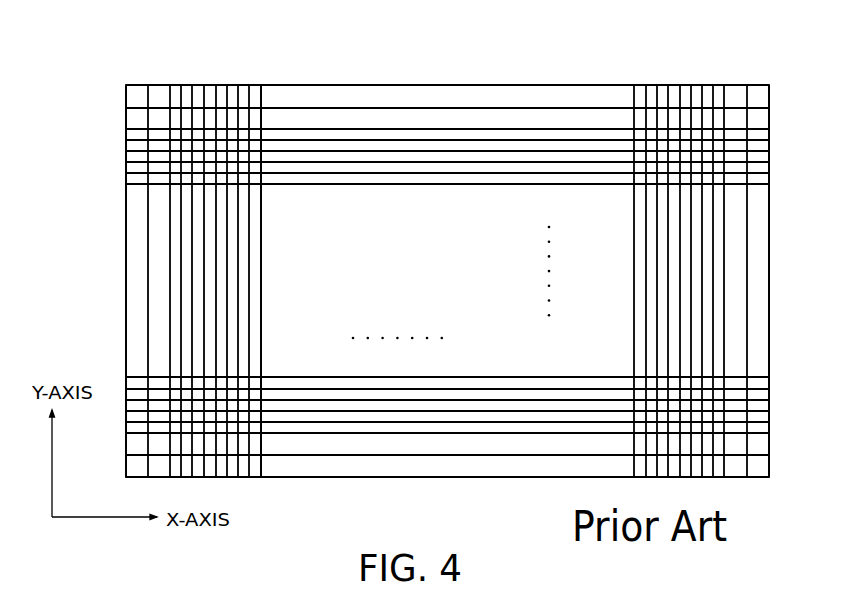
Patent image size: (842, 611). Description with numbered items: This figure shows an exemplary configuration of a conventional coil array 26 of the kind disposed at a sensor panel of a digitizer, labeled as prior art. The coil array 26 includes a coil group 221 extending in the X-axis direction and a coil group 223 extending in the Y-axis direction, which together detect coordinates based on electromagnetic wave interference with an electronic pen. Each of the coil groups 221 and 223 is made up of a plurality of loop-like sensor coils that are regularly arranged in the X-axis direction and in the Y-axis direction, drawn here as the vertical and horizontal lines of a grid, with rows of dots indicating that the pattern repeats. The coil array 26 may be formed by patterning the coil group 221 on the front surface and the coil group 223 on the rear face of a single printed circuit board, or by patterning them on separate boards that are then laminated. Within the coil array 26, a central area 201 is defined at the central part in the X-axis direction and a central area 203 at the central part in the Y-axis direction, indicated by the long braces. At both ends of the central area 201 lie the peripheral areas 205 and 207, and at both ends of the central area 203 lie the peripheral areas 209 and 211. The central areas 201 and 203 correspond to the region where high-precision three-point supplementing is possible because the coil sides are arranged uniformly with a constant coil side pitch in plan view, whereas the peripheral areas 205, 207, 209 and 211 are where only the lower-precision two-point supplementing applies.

The coil array 26 is at (578, 63).
The central area 201 is at (724, 77).
The central area 203 is at (122, 131).
The peripheral area 205 is at (170, 77).
The peripheral area 207 is at (769, 77).
The peripheral area 209 is at (122, 433).
The peripheral area 211 is at (122, 86).
The coil group 221 is at (265, 268).
The coil group 223 is at (475, 372).